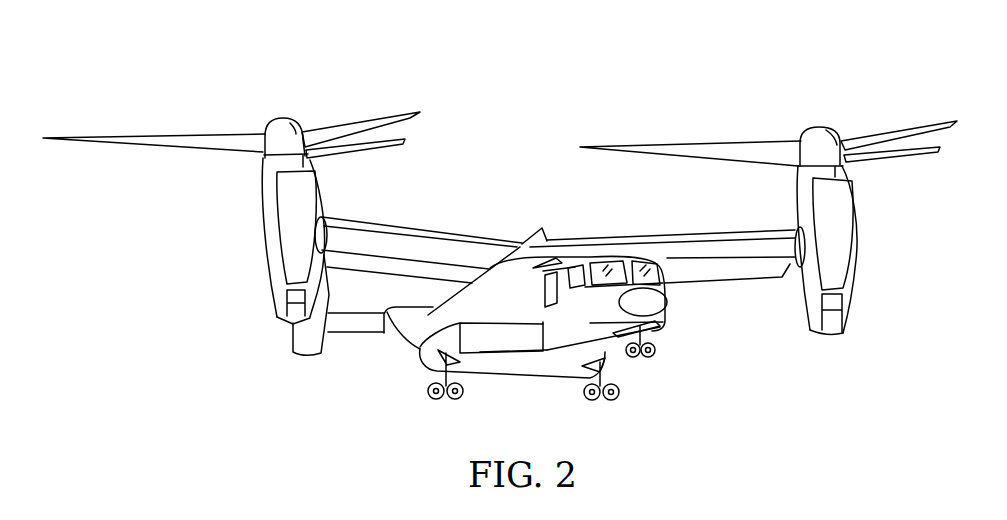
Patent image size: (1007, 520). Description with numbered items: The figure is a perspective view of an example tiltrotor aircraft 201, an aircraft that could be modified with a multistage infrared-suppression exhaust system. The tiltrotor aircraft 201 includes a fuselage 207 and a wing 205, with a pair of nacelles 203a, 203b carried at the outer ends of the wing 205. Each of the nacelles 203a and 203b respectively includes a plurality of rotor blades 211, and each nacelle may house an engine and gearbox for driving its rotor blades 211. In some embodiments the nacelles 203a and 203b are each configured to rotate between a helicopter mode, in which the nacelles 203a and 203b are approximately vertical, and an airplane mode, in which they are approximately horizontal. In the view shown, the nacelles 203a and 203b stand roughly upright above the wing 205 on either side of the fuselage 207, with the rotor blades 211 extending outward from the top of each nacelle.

The tiltrotor aircraft 201 is at (501, 206).
The nacelle 203a is at (238, 229).
The nacelle 203b is at (868, 242).
The wing 205 is at (436, 230).
The fuselage 207 is at (668, 308).
The rotor blades 211 is at (188, 135).